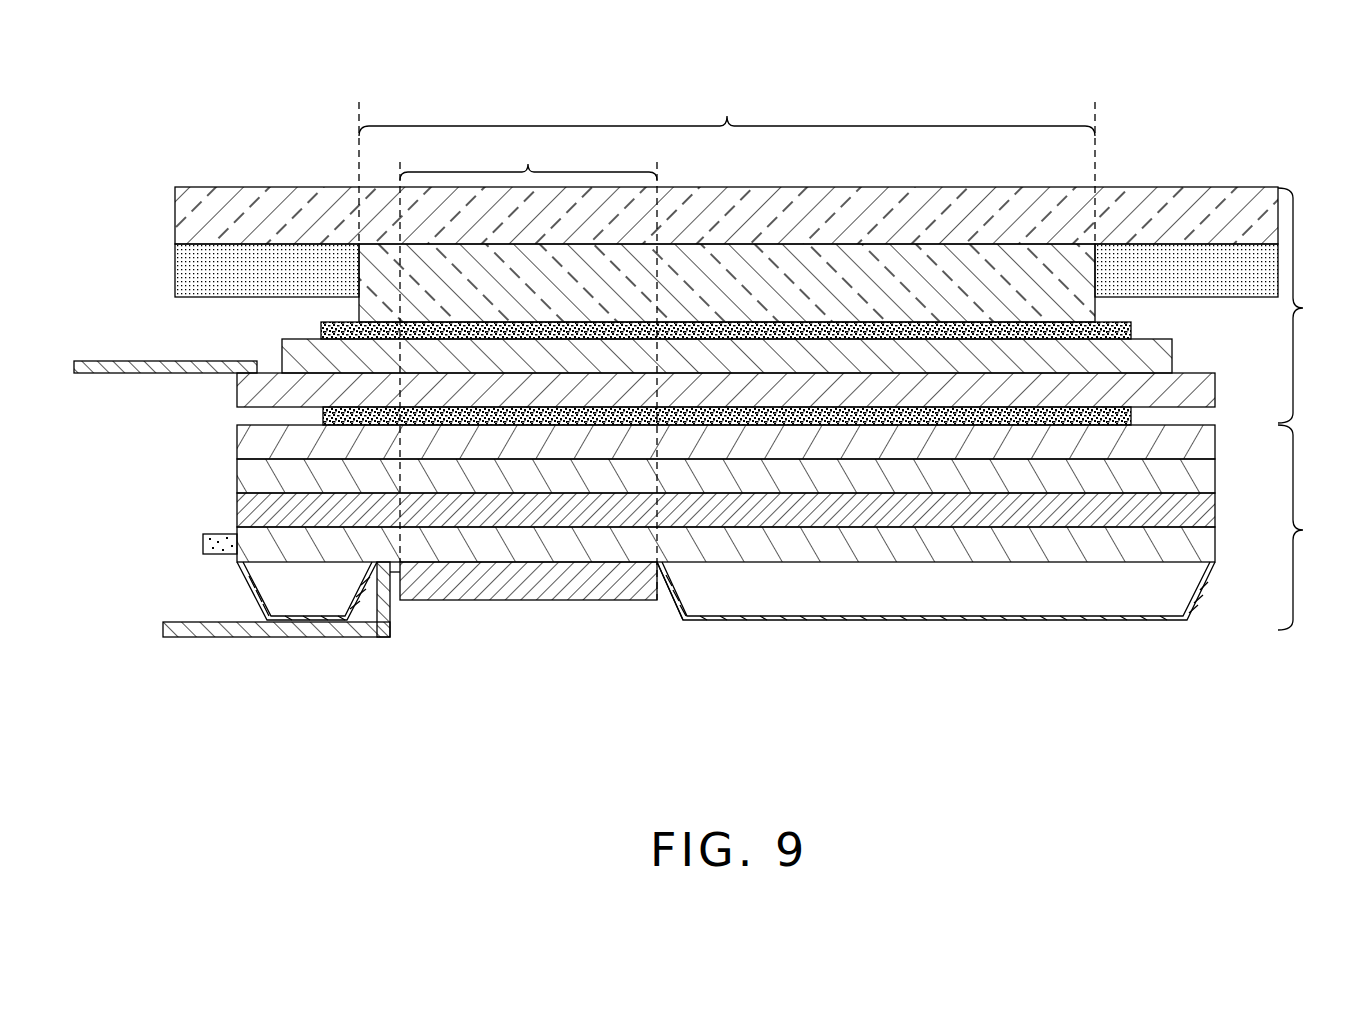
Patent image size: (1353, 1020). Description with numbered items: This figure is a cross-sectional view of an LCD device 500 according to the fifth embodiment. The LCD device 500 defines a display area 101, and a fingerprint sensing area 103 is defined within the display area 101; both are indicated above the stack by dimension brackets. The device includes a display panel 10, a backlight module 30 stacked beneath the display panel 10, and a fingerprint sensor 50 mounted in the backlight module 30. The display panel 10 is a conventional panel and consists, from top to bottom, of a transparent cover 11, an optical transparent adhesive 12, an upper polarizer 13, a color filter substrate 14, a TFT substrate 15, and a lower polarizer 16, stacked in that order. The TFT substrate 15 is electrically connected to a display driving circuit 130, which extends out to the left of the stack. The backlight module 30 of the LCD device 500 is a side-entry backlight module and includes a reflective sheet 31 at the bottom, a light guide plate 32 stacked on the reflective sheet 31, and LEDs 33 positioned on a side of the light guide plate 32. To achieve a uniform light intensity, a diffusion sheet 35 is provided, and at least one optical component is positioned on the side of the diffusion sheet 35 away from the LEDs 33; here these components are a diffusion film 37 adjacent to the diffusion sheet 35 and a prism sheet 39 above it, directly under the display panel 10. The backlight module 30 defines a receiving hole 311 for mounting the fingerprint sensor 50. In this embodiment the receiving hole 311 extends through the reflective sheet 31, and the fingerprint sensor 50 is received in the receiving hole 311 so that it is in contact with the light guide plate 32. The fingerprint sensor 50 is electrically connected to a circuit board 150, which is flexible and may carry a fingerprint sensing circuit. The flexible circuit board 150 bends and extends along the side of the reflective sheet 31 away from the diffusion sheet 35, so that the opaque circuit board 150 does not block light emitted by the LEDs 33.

The LCD device 500 is at (753, 42).
The display area 101 is at (727, 159).
The fingerprint sensing area 103 is at (528, 367).
The display panel 10 is at (1315, 305).
The transparent cover 11 is at (192, 221).
The optical transparent adhesive 12 is at (378, 280).
The upper polarizer 13 is at (330, 323).
The color filter substrate 14 is at (298, 358).
The display driving circuit 130 is at (133, 370).
The TFT substrate 15 is at (253, 391).
The lower polarizer 16 is at (322, 415).
The backlight module 30 is at (1315, 527).
The prism sheet 39 is at (255, 445).
The diffusion film 37 is at (258, 475).
The diffusion sheet 35 is at (258, 510).
The LEDs 33 is at (203, 544).
The light guide plate 32 is at (248, 561).
The reflective sheet 31 is at (847, 622).
The receiving hole 311 is at (672, 598).
The fingerprint sensor 50 is at (545, 588).
The circuit board 150 is at (218, 627).